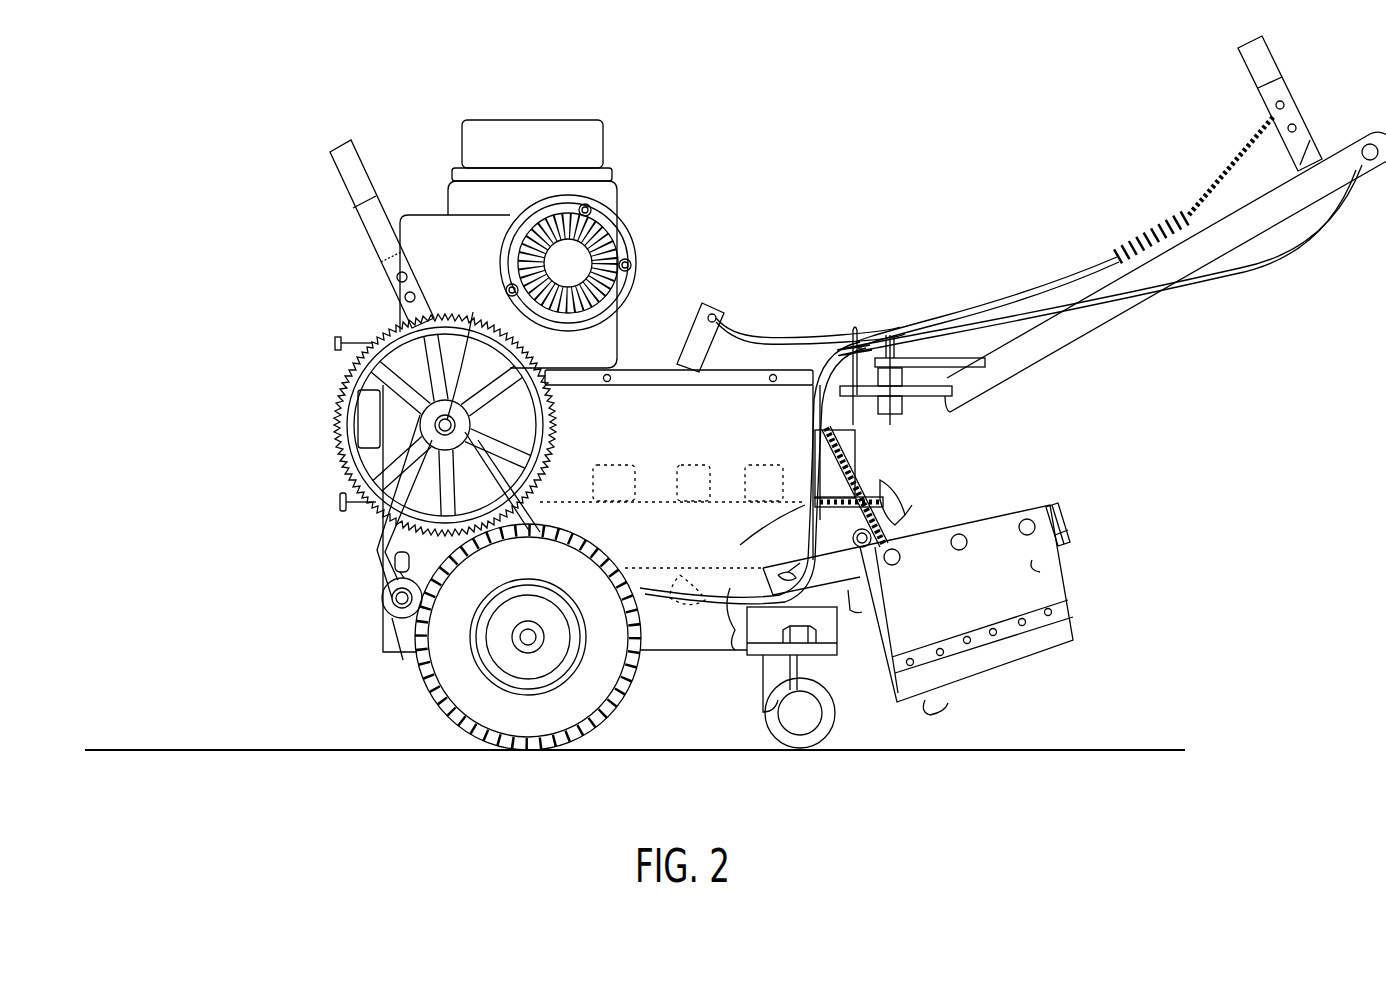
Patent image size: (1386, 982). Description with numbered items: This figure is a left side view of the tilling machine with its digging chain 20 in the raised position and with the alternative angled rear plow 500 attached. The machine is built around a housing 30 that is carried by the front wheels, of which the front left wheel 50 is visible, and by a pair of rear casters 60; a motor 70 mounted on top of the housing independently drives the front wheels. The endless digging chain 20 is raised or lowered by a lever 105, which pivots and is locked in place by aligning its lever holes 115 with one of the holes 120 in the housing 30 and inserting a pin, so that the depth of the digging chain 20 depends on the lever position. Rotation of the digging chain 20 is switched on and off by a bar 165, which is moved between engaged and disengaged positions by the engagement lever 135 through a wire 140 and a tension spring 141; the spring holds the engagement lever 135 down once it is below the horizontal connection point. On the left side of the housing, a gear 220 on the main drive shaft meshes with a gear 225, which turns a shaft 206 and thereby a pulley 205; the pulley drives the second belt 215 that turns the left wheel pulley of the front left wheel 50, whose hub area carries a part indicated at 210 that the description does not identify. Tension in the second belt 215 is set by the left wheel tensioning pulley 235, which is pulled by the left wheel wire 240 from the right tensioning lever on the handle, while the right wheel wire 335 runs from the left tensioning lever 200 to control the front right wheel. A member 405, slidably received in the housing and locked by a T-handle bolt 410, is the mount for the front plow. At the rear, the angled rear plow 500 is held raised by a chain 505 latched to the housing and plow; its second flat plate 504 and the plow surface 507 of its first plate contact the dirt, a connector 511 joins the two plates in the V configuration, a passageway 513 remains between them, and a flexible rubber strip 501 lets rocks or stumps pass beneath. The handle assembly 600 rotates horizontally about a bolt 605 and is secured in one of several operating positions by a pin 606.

The digging chain 20 is at (900, 490).
The housing 30 is at (620, 437).
The front left wheel 50 is at (480, 705).
The rear casters 60 is at (780, 700).
The motor 70 is at (562, 142).
The lever 105 is at (355, 176).
The lever holes 115 is at (404, 296).
The holes 120 is at (612, 381).
The engagement lever 135 is at (1250, 60).
The wire 140 is at (1212, 180).
The tension spring 141 is at (1145, 232).
The bar 165 is at (695, 337).
The left tensioning lever 200 is at (1370, 144).
The pulley 205 is at (420, 420).
The shaft 206 is at (465, 351).
The wheel hub 210 is at (540, 640).
The second belt 215 is at (380, 545).
The gear 220 is at (552, 530).
The gear 225 is at (352, 372).
The left wheel tensioning pulley 235 is at (400, 640).
The left wheel wire 240 is at (776, 644).
The right wheel wire 335 is at (762, 333).
The member 405 is at (362, 411).
The T-handle bolt 410 is at (341, 500).
The angled rear plow 500 is at (1015, 582).
The flexible rubber strip 501 is at (1030, 650).
The second elongated flat plate 504 is at (1045, 565).
The chain 505 is at (842, 446).
The plow surface 507 is at (960, 711).
The connector 511 is at (1065, 505).
The passageway 513 is at (1068, 545).
The handle assembly 600 is at (1028, 352).
The bolt 605 is at (893, 345).
The pin 606 is at (850, 358).